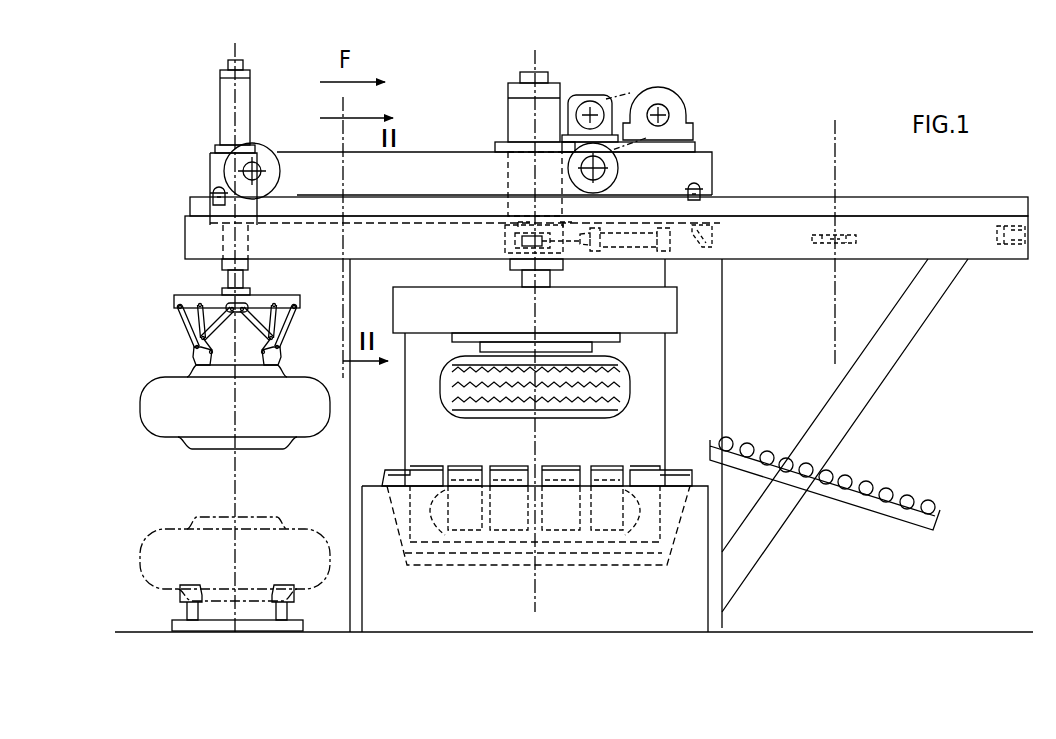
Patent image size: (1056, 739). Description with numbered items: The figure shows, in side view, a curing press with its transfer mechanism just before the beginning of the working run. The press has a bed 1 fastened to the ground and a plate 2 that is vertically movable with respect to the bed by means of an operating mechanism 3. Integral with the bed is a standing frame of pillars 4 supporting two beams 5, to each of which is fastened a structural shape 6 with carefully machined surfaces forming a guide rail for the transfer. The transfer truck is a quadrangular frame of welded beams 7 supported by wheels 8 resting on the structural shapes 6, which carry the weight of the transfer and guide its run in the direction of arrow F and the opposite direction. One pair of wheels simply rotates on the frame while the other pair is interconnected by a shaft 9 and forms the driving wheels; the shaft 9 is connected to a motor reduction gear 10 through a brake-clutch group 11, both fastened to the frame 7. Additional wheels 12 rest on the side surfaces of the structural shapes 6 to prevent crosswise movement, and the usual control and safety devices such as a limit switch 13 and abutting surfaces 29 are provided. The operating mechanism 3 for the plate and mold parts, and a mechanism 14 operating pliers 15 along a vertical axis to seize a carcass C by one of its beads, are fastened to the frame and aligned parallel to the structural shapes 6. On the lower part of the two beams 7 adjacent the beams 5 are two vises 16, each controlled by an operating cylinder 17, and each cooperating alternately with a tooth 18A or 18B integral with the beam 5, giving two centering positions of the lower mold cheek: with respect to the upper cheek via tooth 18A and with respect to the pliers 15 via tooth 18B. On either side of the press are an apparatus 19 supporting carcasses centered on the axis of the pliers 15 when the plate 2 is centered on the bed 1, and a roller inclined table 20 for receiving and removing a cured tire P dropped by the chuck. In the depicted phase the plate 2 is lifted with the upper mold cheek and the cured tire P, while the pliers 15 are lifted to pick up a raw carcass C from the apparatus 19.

The bed 1 is at (675, 600).
The plate 2 is at (622, 242).
The operating mechanism 3 is at (522, 120).
The pillars 4 is at (372, 448).
The beams 5 is at (882, 238).
The structural shape 6 is at (920, 205).
The beams of the truck frame 7 is at (433, 175).
The wheels 8 is at (262, 163).
The shaft 9 is at (605, 168).
The motor reduction gear 10 is at (572, 107).
The brake-clutch group 11 is at (674, 95).
The additional wheels 12 is at (210, 200).
The limit switch 13 is at (1022, 240).
The mechanism for operating pliers 14 is at (222, 112).
The pliers 15 is at (213, 302).
The vises 16 is at (642, 315).
The operating cylinder 17 is at (537, 242).
The tooth 18A is at (550, 255).
The tooth 18B is at (838, 242).
The apparatus for supporting tire carcasses 19 is at (192, 590).
The roller inclined table 20 is at (827, 492).
The abutting surfaces 29 is at (762, 195).
The carcass C is at (150, 375).
The cured tire P is at (452, 422).